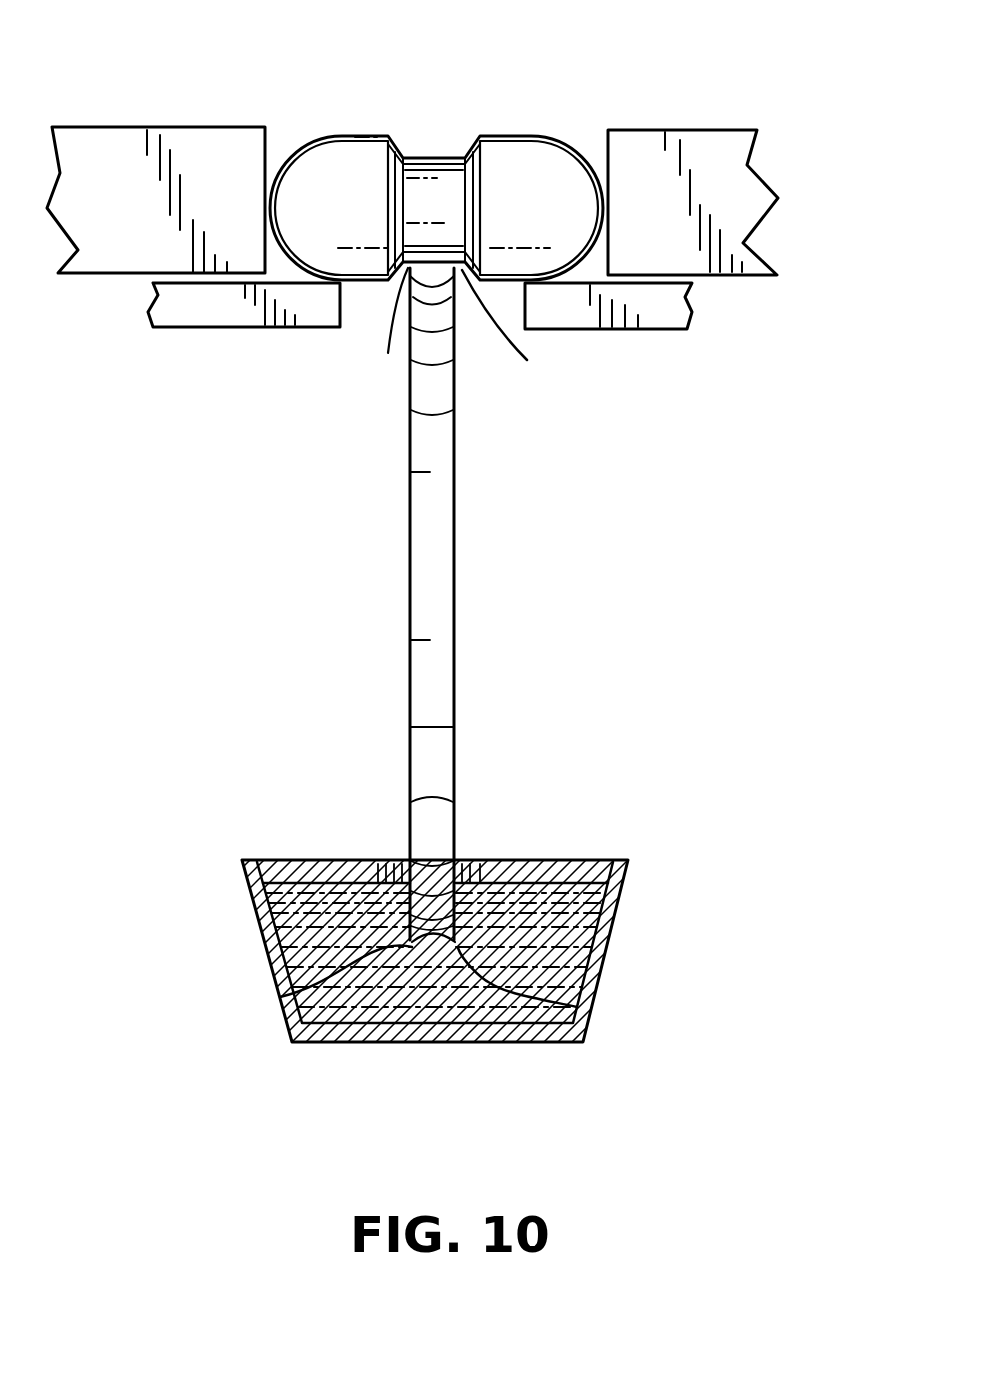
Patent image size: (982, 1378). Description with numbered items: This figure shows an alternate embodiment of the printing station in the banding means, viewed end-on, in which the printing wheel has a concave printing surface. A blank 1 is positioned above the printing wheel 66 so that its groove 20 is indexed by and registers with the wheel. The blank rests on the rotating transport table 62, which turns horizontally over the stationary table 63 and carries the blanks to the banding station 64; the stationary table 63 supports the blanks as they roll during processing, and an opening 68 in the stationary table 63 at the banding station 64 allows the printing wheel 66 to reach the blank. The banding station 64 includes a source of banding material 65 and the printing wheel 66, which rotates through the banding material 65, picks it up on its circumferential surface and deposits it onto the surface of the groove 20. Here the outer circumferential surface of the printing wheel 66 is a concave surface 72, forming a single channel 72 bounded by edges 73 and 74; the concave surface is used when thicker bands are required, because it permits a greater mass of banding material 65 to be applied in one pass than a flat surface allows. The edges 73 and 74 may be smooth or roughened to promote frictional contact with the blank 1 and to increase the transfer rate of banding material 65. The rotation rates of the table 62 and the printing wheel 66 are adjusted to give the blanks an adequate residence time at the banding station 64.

The blank 1 is at (542, 82).
The groove 20 is at (438, 158).
The rotating transport table 62 is at (717, 182).
The stationary table 63 is at (690, 307).
The banding station 64 is at (517, 1053).
The banding material 65 is at (557, 960).
The printing wheel 66 is at (442, 507).
The opening 68 is at (377, 320).
The concave surface 72 is at (442, 288).
The edge 73 is at (245, 990).
The edge 74 is at (628, 1050).